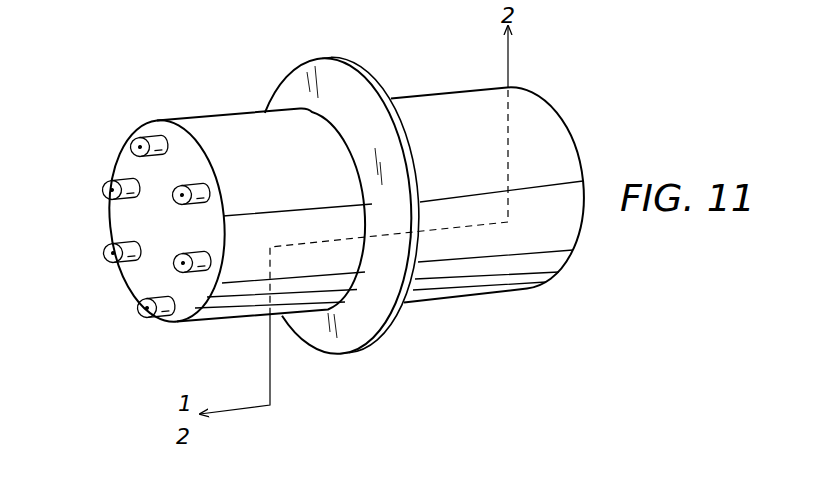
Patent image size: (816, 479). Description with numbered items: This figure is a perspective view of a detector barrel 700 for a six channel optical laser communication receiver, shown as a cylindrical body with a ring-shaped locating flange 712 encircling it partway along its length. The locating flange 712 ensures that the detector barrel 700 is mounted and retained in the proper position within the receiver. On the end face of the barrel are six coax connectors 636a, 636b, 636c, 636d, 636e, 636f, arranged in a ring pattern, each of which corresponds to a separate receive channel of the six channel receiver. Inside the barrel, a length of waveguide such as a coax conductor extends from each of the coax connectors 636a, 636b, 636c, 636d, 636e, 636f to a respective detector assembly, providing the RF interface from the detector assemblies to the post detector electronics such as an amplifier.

The detector barrel 700 is at (579, 101).
The locating flange 712 is at (348, 76).
The coax connector 636a is at (132, 295).
The coax connector 636b is at (186, 318).
The coax connector 636c is at (194, 186).
The coax connector 636d is at (156, 137).
The coax connector 636e is at (125, 182).
The coax connector 636f is at (125, 248).